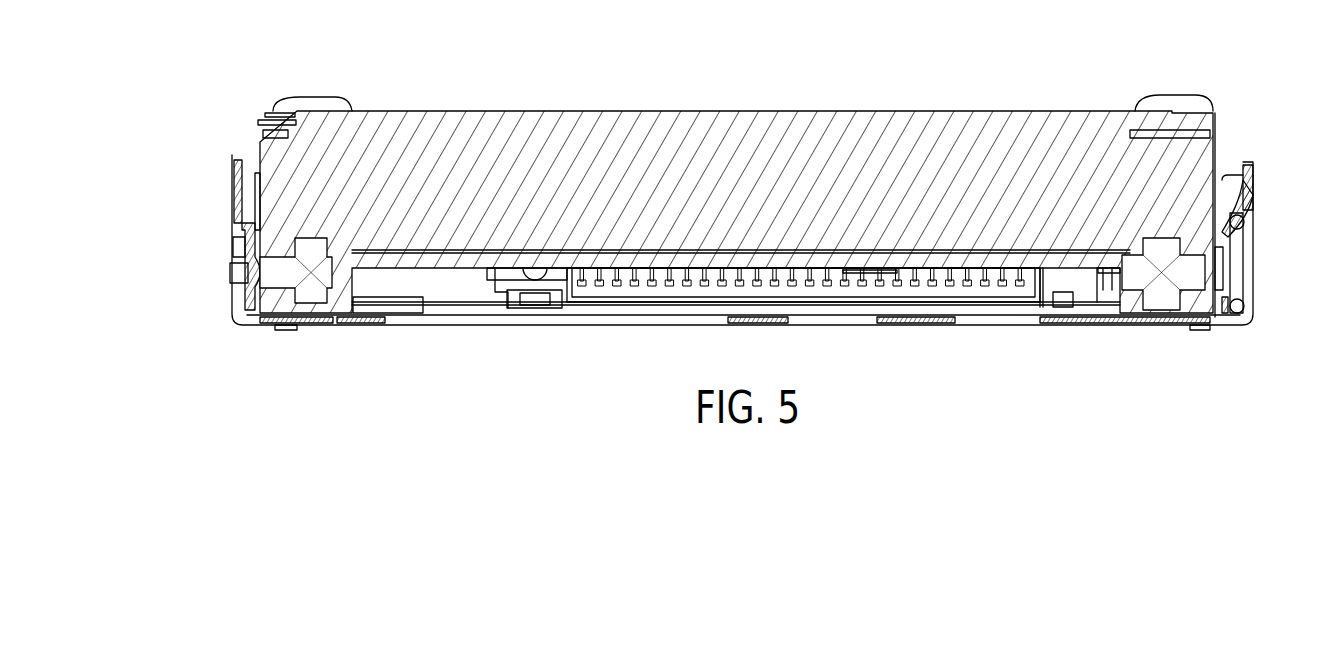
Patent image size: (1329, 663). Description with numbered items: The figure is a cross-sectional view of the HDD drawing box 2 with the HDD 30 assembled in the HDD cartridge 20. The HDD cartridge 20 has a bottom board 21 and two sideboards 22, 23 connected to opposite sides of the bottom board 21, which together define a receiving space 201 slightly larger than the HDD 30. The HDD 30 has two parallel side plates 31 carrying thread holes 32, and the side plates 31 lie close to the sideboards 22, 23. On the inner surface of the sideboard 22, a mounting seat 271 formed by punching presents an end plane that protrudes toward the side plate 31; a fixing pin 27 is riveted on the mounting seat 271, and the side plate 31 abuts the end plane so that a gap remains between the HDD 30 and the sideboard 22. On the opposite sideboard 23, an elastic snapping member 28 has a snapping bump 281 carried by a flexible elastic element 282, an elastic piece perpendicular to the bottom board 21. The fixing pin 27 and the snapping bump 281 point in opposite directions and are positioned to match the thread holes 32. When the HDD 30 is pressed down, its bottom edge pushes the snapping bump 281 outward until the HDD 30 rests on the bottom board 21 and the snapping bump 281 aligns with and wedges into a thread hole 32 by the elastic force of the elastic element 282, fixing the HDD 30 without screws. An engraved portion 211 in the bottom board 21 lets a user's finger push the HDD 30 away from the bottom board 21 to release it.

The HDD drawing box 2 is at (1258, 218).
The HDD cartridge 20 is at (228, 152).
The receiving space 201 is at (467, 293).
The bottom board 21 is at (916, 324).
The engraved portion 211 is at (587, 324).
The sideboard 22 is at (1255, 178).
The sideboard 23 is at (240, 222).
The fixing pin 27 is at (1243, 272).
The mounting seat 271 is at (1222, 218).
The elastic snapping member 28 is at (245, 300).
The snapping bump 281 is at (247, 272).
The elastic element 282 is at (247, 250).
The HDD 30 is at (748, 118).
The side plate 31 is at (262, 148).
The thread hole 32 is at (285, 292).